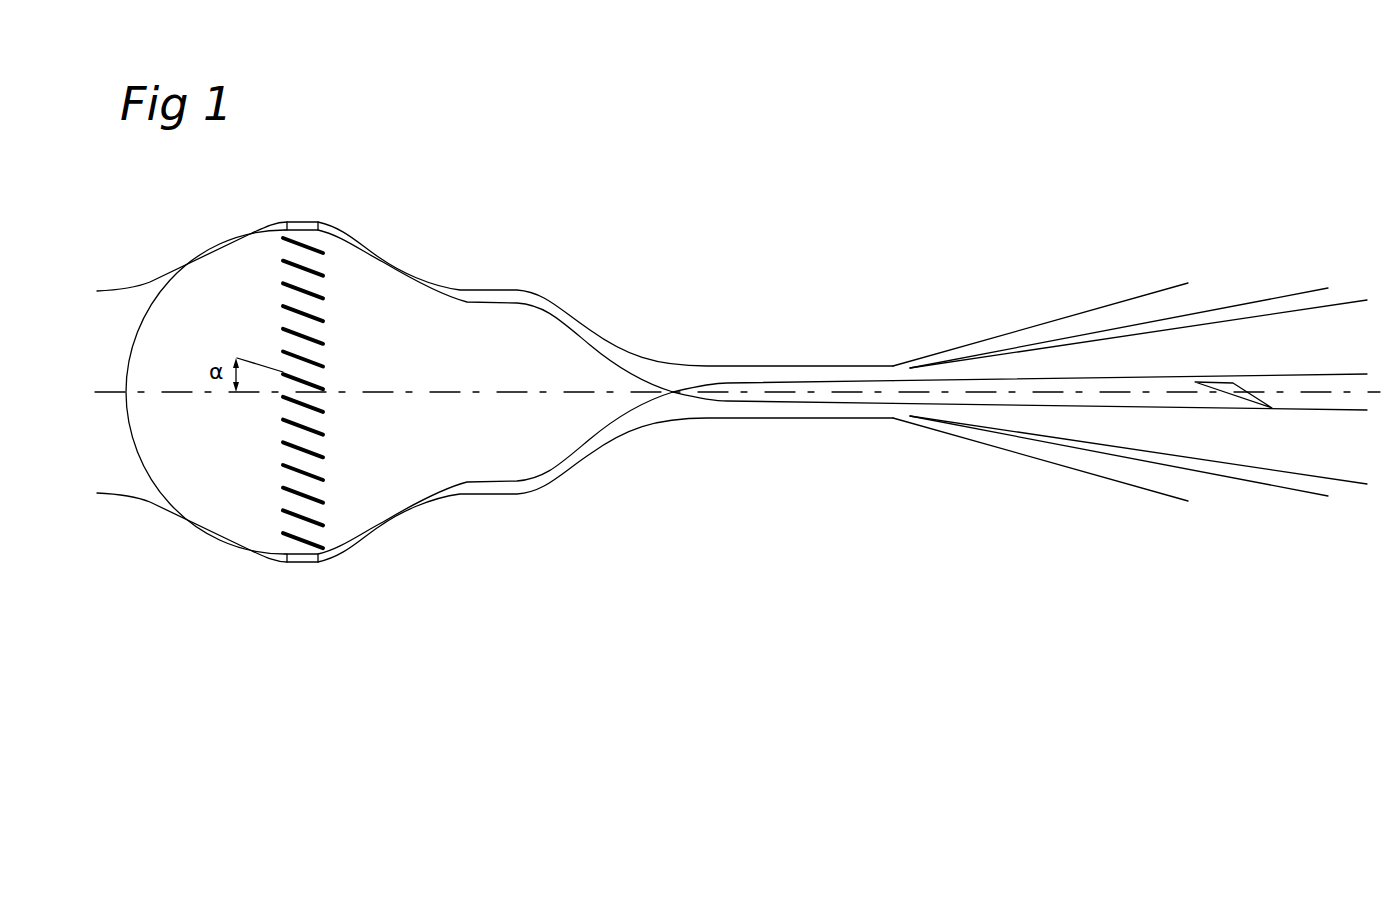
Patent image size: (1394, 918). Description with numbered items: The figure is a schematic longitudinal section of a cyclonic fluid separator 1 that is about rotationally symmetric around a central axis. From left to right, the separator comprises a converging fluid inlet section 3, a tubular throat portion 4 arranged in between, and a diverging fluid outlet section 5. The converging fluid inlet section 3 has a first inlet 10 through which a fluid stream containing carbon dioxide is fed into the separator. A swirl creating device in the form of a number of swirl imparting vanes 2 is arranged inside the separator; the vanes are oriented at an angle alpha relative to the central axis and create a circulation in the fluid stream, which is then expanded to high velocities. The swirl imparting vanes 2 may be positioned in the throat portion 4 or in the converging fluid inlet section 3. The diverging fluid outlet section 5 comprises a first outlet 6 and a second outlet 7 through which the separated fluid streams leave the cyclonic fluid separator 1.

The cyclonic fluid separator 1 is at (540, 272).
The swirl imparting vanes 2 is at (285, 443).
The converging fluid inlet section 3 is at (408, 272).
The tubular throat portion 4 is at (698, 378).
The diverging fluid outlet section 5 is at (906, 412).
The first outlet 6 is at (1180, 432).
The second outlet 7 is at (1100, 320).
The first inlet 10 is at (282, 270).